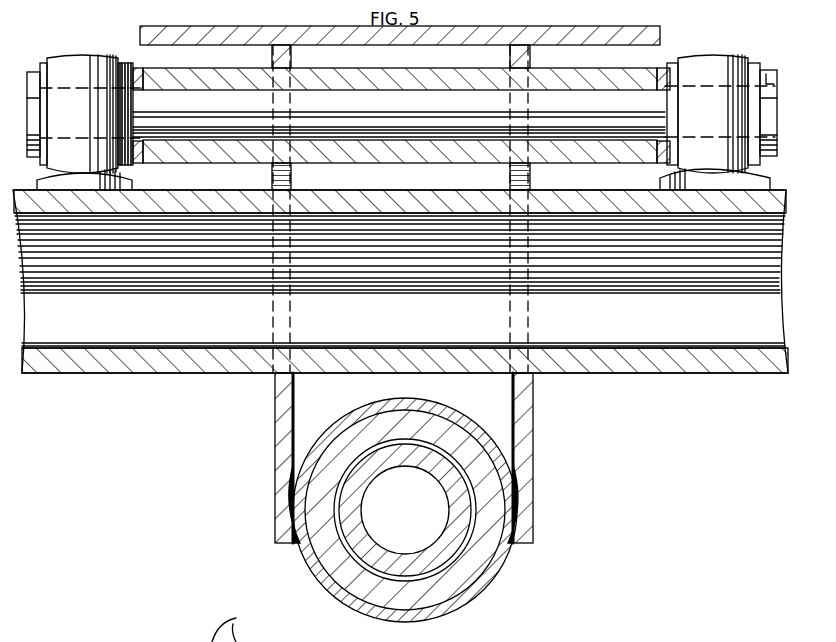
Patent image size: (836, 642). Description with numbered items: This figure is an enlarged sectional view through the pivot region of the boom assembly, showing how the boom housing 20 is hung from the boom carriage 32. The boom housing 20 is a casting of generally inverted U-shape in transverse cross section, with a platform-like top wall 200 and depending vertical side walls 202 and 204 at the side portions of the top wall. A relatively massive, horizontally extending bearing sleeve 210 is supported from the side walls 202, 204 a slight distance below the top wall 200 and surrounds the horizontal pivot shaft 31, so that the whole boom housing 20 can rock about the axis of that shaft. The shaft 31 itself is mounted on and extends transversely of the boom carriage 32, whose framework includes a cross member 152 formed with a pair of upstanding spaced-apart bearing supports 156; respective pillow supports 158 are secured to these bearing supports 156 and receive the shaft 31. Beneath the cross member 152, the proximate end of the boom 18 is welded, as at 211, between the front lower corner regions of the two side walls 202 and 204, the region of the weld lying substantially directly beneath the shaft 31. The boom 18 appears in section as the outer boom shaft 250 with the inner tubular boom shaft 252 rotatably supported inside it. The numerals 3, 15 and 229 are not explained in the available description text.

The bearing assembly 3 is at (770, 70).
The bearing base 15 is at (748, 185).
The boom 18 is at (455, 608).
The boom housing 20 is at (273, 443).
The horizontal pivot shaft 31 is at (400, 113).
The boom carriage 32 is at (400, 320).
The cross member 152 is at (384, 193).
The bearing supports 156 is at (132, 184).
The pillow supports 158 is at (100, 62).
The top wall 200 is at (480, 27).
The side wall 202 is at (294, 403).
The side wall 204 is at (532, 402).
The bearing sleeve 210 is at (392, 70).
The weld 211 is at (297, 480).
The adjacent roller 229 is at (240, 626).
The outer boom shaft 250 is at (452, 578).
The inner tubular boom shaft 252 is at (450, 543).